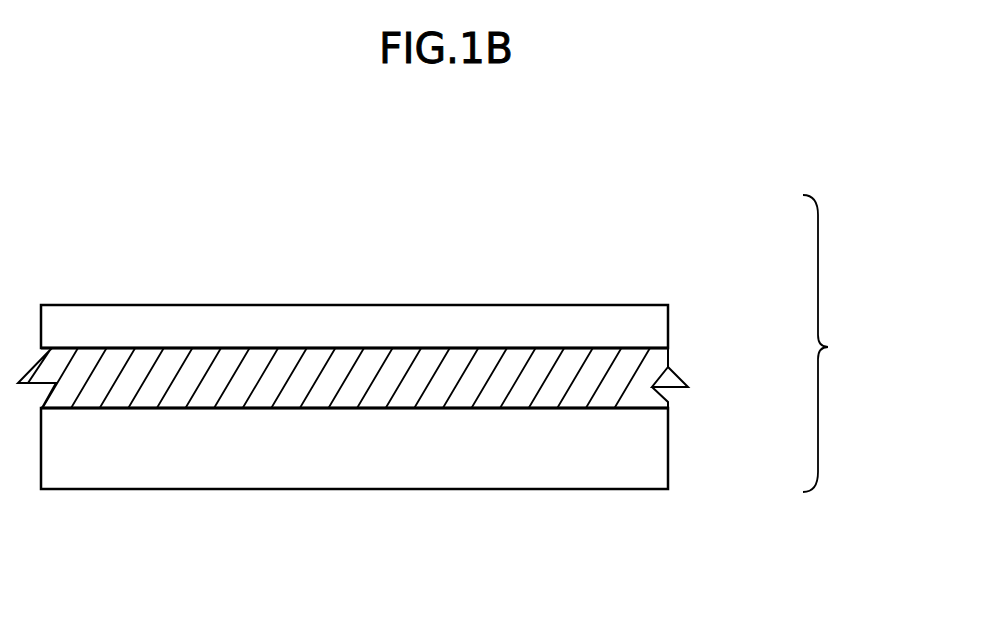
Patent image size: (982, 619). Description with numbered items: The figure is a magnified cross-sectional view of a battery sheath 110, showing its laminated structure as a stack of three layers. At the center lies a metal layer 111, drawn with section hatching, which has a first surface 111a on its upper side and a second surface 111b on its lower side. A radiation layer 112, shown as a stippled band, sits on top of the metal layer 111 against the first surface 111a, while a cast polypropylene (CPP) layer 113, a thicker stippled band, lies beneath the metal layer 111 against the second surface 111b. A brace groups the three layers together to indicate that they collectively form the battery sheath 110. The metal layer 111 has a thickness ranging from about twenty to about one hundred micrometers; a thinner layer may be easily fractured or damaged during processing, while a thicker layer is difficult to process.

The battery sheath 110 is at (844, 343).
The metal layer 111 is at (648, 371).
The first surface 111a is at (635, 347).
The second surface 111b is at (633, 413).
The radiation layer 112 is at (632, 315).
The cast polypropylene (CPP) layer 113 is at (653, 462).